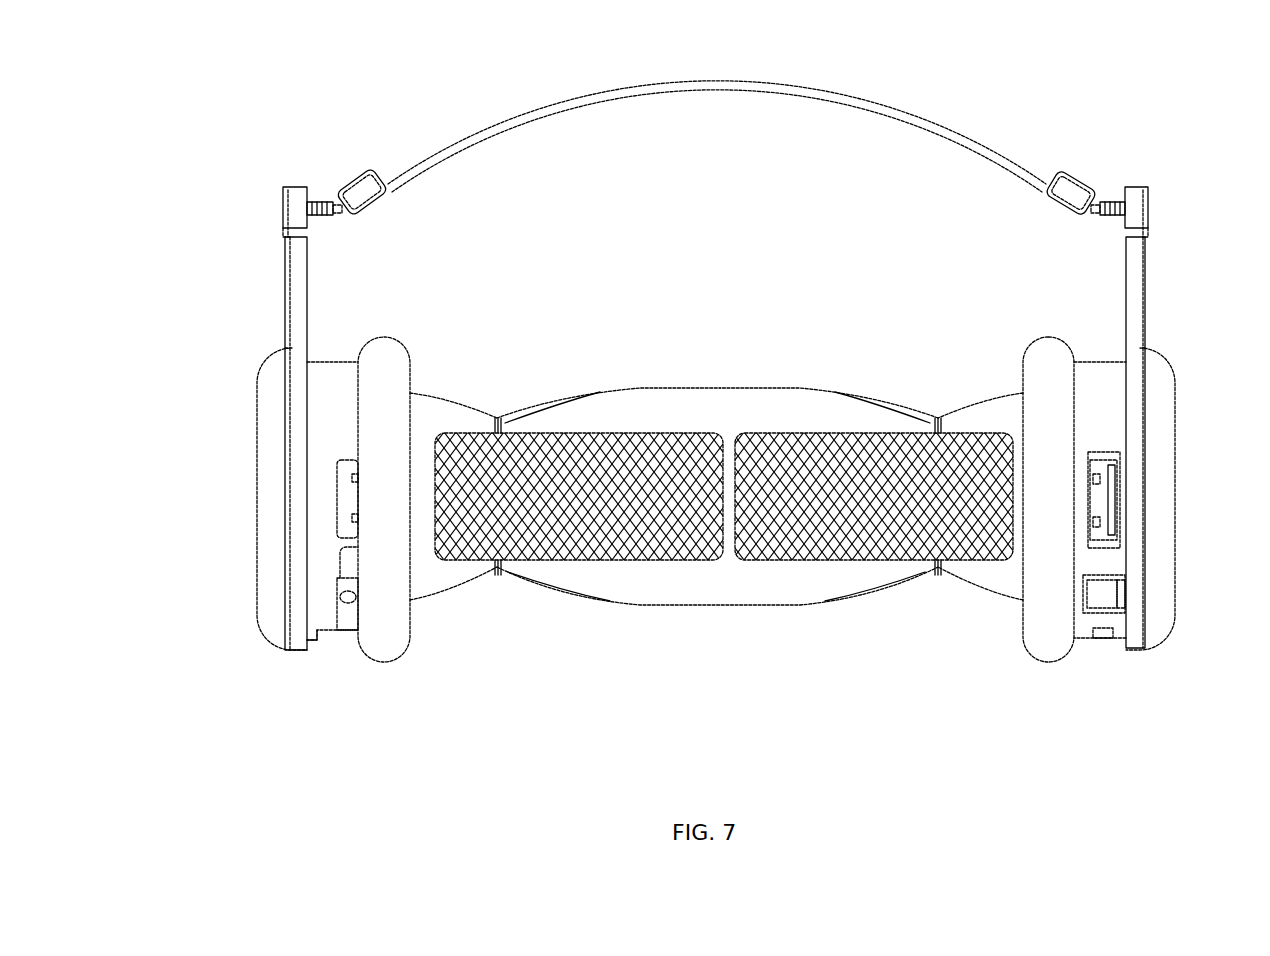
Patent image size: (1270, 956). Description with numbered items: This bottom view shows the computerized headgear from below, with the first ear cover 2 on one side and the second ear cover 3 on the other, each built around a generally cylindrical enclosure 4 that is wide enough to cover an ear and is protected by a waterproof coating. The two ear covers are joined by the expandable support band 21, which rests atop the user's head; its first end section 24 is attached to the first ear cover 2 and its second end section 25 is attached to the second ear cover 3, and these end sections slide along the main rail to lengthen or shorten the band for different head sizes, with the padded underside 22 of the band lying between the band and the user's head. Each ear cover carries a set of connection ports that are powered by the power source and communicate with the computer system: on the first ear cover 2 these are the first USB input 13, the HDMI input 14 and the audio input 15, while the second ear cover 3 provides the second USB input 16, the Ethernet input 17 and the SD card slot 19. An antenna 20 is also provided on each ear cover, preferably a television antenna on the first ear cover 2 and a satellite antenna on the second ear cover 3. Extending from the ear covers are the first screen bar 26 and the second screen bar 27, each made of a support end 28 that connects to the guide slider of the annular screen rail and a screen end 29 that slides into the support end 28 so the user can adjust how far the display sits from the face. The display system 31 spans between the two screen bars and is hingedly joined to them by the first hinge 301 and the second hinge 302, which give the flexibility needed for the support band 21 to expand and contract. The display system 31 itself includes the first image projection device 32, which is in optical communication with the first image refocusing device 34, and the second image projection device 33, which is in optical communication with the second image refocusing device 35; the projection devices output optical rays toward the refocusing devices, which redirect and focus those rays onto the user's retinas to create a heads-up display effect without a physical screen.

The first ear cover 2 is at (276, 568).
The second ear cover 3 is at (1160, 608).
The enclosure 4 is at (256, 456).
The first Universal Serial Bus (USB) input 13 is at (348, 502).
The High-Definition Multimedia Interface (HDMI) input 14 is at (330, 632).
The audio input 15 is at (350, 574).
The second USB input 16 is at (1098, 502).
The Ethernet input 17 is at (1097, 594).
The Secure Digital (SD) card slot 19 is at (1100, 640).
The antenna 20 is at (276, 502).
The expandable support band 21 is at (712, 622).
The mesh cushion 22 is at (700, 416).
The first end section 24 is at (420, 408).
The second end section 25 is at (1000, 414).
The first screen bar 26 is at (322, 272).
The second screen bar 27 is at (1102, 272).
The support end 28 is at (302, 346).
The screen end 29 is at (294, 208).
The display system 31 is at (716, 132).
The first image projection device 32 is at (333, 204).
The second image projection device 33 is at (1107, 203).
The first image refocusing device 34 is at (370, 178).
The second image refocusing device 35 is at (1060, 178).
The first hinge 301 is at (332, 223).
The second hinge 302 is at (1102, 223).